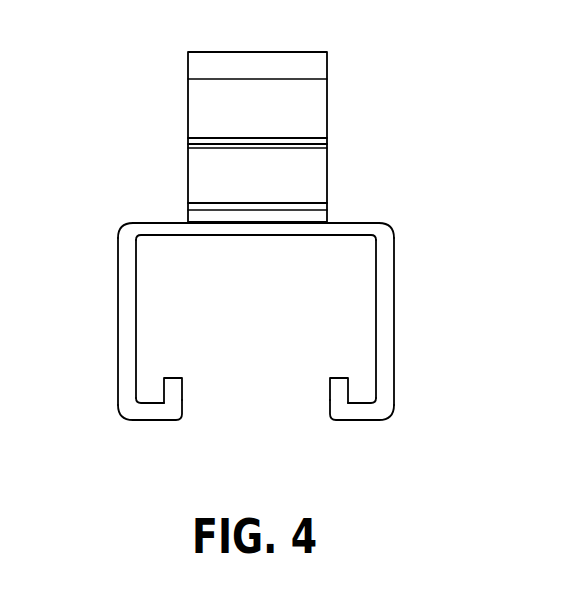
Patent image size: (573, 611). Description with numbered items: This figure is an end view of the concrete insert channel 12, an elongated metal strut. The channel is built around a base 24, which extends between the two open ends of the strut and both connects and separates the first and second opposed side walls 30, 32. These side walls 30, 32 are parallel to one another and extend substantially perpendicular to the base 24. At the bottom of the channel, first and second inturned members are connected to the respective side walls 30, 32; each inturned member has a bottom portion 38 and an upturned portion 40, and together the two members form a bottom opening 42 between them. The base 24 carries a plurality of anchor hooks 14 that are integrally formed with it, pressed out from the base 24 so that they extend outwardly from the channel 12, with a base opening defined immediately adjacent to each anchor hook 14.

The concrete insert channel 12 is at (117, 103).
The anchor hook 14 is at (295, 107).
The base 24 is at (345, 228).
The first side wall 30 is at (128, 318).
The second side wall 32 is at (388, 316).
The bottom portion 38 is at (149, 412).
The upturned portion 40 is at (174, 390).
The bottom opening 42 is at (257, 395).